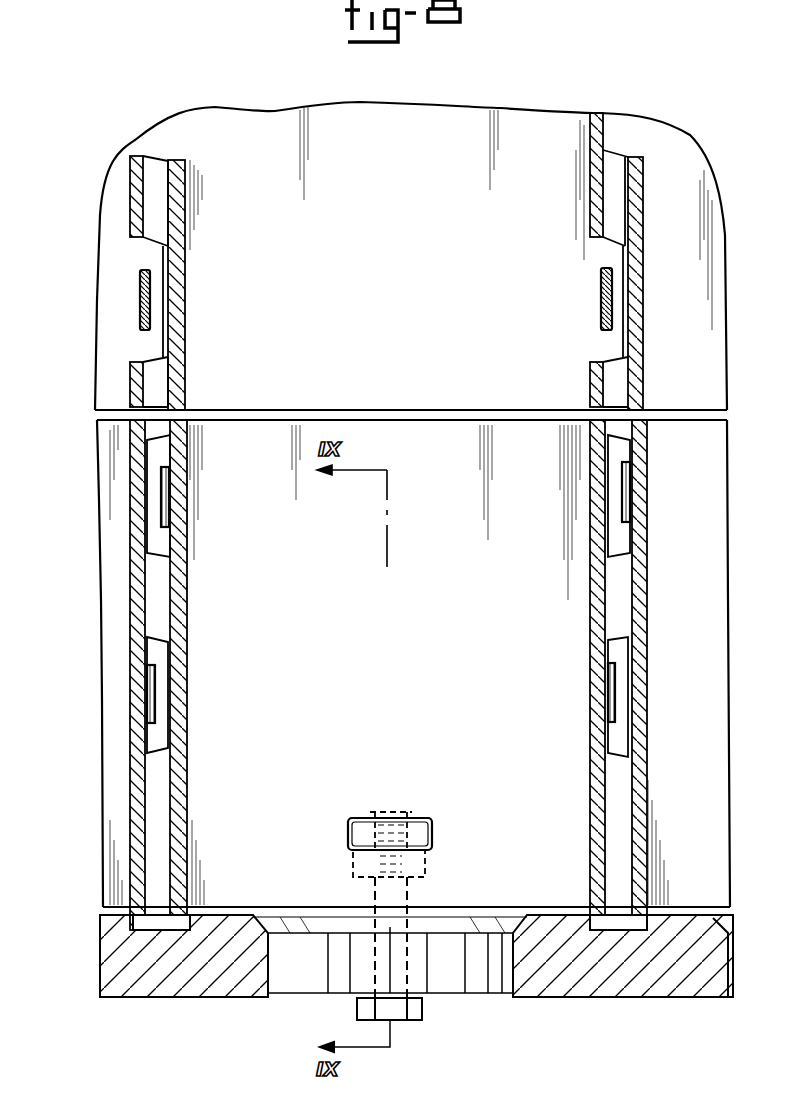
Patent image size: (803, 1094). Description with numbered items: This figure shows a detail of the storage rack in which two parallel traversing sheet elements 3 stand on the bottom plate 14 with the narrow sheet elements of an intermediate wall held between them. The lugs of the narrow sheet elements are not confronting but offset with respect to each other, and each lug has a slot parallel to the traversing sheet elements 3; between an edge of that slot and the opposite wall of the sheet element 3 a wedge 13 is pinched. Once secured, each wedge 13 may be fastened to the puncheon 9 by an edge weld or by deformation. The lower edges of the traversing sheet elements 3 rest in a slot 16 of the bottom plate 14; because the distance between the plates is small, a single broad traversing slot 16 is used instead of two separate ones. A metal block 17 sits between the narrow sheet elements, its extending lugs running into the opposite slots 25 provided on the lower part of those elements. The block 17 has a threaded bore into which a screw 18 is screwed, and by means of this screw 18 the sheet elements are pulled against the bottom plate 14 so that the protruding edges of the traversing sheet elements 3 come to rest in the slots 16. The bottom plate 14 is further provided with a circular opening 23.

The traversing sheet element 3 is at (178, 860).
The puncheon 9 is at (135, 357).
The wedge 13 is at (140, 303).
The bottom plate 14 is at (228, 967).
The slot 16 is at (162, 932).
The metal block 17 is at (418, 832).
The screw 18 is at (420, 1008).
The circular opening 23 is at (490, 977).
The slot 25 is at (420, 818).